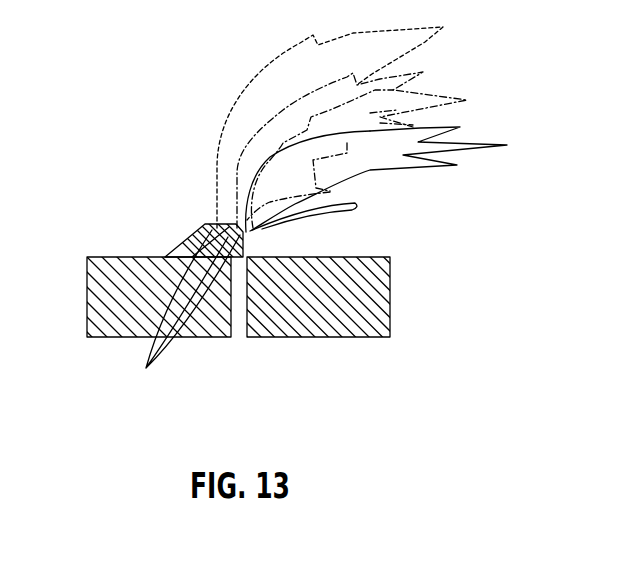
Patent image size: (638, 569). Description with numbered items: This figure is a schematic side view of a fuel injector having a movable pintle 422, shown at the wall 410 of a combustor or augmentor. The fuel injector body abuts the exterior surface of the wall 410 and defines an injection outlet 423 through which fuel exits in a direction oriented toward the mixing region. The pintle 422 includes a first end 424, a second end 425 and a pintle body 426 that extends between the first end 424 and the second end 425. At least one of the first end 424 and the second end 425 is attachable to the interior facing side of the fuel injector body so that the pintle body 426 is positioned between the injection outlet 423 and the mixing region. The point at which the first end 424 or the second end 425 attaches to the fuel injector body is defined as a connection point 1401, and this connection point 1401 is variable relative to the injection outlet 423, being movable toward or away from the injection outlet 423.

The wall 410 is at (99, 257).
The pintle 422 is at (207, 226).
The injection outlet 423 is at (243, 267).
The first end 424 is at (202, 233).
The second end 425 is at (330, 192).
The pintle body 426 is at (250, 250).
The connection point 1401 is at (179, 317).